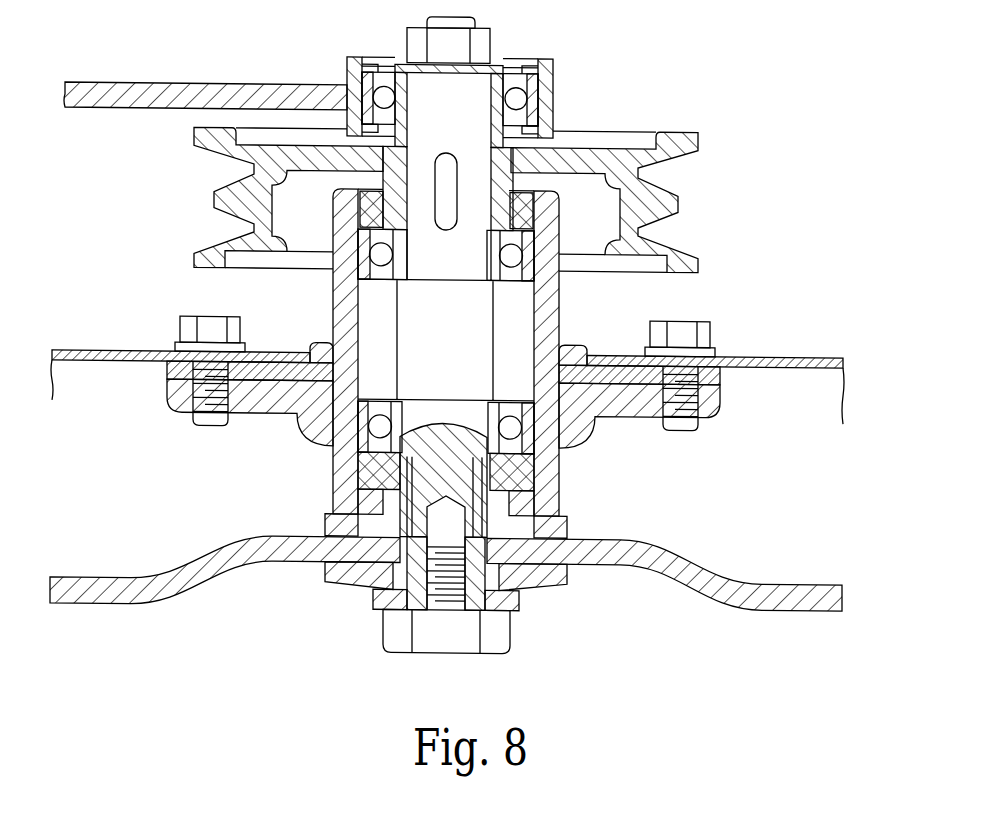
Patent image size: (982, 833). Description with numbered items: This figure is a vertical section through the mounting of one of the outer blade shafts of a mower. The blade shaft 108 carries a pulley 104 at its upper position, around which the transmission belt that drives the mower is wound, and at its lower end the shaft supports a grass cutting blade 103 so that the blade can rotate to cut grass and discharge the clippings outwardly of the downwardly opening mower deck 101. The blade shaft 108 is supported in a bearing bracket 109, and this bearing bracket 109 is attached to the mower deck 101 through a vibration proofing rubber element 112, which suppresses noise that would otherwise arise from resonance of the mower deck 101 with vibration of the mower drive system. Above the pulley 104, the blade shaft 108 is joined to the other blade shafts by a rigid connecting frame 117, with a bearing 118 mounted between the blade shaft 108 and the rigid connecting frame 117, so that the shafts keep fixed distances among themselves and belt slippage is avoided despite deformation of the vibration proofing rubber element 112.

The mower deck 101 is at (98, 354).
The grass cutting blade 103 is at (123, 581).
The pulley 104 is at (680, 198).
The blade shaft 108 is at (483, 320).
The bearing bracket 109 is at (333, 302).
The vibration proofing rubber element 112 is at (170, 366).
The rigid connecting frame 117 is at (117, 92).
The bearing 118 is at (516, 100).